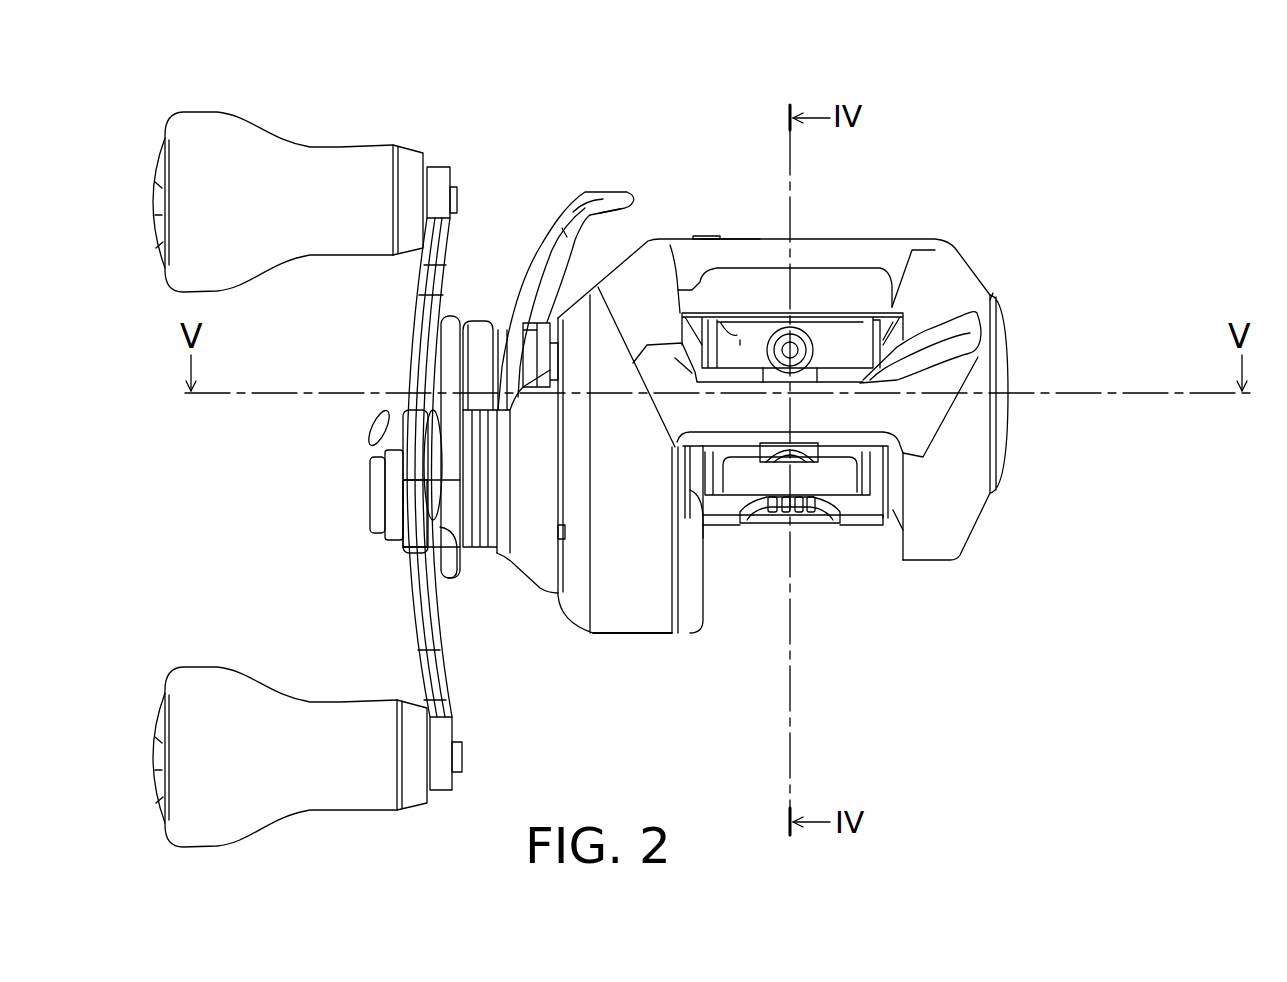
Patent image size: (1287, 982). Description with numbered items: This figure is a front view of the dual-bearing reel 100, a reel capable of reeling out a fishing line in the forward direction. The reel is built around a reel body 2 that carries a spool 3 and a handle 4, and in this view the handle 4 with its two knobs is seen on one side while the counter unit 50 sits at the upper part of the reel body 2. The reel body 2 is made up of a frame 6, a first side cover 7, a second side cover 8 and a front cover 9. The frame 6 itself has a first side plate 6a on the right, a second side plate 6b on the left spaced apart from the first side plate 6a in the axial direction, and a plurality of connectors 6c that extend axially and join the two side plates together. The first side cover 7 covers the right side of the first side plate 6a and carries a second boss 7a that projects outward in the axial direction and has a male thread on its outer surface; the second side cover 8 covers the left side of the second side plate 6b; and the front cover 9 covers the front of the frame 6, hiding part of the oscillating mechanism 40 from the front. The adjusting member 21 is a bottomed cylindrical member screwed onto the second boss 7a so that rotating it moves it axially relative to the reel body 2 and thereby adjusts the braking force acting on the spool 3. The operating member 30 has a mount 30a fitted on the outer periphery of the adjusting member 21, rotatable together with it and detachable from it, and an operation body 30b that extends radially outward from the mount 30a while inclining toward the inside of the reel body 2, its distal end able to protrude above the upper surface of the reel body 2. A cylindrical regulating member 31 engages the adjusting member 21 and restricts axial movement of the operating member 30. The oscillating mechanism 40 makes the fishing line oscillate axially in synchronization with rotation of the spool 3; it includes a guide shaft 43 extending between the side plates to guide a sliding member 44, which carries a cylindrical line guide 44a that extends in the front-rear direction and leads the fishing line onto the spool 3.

The dual-bearing reel 100 is at (1005, 158).
The reel body 2 is at (918, 236).
The spool 3 is at (740, 340).
The handle 4 is at (318, 187).
The frame 6 is at (984, 276).
The first side plate 6a is at (695, 560).
The second side plate 6b is at (897, 553).
The connectors 6c is at (727, 517).
The first side cover 7 is at (575, 598).
The second boss 7a is at (600, 212).
The second side cover 8 is at (965, 527).
The front cover 9 is at (910, 413).
The adjusting member 21 is at (533, 358).
The operating member 30 is at (507, 250).
The mount 30a is at (510, 352).
The operation body 30b is at (566, 235).
The regulating member 31 is at (480, 380).
The oscillating mechanism 40 is at (823, 343).
The guide shaft 43 is at (950, 372).
The sliding member 44 is at (810, 467).
The line guide 44a is at (790, 328).
The counter unit 50 is at (743, 235).